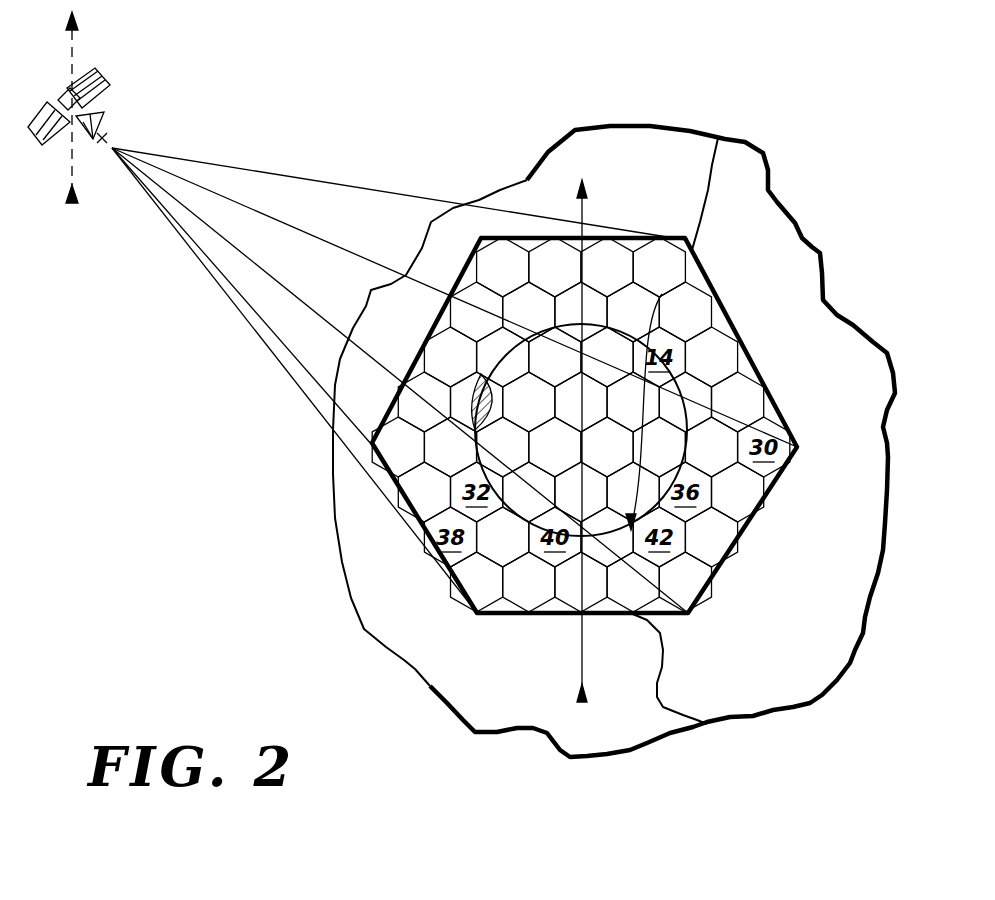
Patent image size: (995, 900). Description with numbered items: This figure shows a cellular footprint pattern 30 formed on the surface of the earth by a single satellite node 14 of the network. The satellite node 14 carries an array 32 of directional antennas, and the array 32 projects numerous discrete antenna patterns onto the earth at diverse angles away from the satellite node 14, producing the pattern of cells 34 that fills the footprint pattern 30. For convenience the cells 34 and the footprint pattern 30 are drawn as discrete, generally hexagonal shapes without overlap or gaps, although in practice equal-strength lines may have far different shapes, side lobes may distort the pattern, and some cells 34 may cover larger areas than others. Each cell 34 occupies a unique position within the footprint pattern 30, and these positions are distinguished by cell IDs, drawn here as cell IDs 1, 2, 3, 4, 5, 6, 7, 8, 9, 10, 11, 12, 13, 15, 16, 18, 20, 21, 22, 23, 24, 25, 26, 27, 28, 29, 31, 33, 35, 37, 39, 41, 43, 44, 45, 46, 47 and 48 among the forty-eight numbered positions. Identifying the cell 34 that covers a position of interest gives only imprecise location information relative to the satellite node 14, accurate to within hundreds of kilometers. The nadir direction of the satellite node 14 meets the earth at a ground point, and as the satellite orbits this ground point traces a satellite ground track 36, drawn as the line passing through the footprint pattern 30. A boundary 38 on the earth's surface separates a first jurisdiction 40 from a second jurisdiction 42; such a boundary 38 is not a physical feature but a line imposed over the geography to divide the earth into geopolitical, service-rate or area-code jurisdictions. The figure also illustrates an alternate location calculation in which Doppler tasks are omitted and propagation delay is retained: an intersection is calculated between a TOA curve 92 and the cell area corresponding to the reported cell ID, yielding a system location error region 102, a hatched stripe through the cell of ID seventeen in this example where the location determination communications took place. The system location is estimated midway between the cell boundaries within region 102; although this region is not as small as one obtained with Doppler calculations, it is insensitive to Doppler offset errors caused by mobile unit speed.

The satellite node 14 is at (102, 78).
The array of directional antennas 32 is at (107, 127).
The cells 34 is at (463, 293).
The satellite ground track 36 is at (586, 210).
The boundary 38 is at (707, 200).
The first jurisdiction 40 is at (815, 270).
The second jurisdiction 42 is at (527, 183).
The footprint pattern 30 is at (786, 496).
The TOA curve 92 is at (800, 472).
The system location error region 102 is at (424, 379).
The cell ID 1 is at (509, 282).
The cell ID 2 is at (561, 282).
The cell ID 3 is at (601, 282).
The cell ID 4 is at (653, 282).
The cell ID 5 is at (483, 327).
The cell ID 6 is at (535, 327).
The cell ID 7 is at (575, 327).
The cell ID 8 is at (627, 327).
The cell ID 9 is at (679, 327).
The cell ID 10 is at (462, 372).
The cell ID 11 is at (514, 372).
The cell ID 12 is at (566, 372).
The cell ID 13 is at (596, 372).
The cell ID 15 is at (700, 372).
The cell ID 16 is at (413, 417).
The cell ID 18 is at (540, 417).
The cell ID 20 is at (622, 417).
The cell ID 21 is at (674, 417).
The cell ID 22 is at (749, 417).
The cell ID 23 is at (387, 462).
The cell ID 24 is at (462, 462).
The cell ID 25 is at (514, 462).
The cell ID 26 is at (566, 462).
The cell ID 27 is at (596, 462).
The cell ID 28 is at (648, 462).
The cell ID 29 is at (700, 462).
The cell ID 31 is at (413, 507).
The cell ID 33 is at (540, 507).
The cell ID 35 is at (622, 507).
The cell ID 37 is at (749, 507).
The cell ID 39 is at (514, 552).
The cell ID 41 is at (596, 552).
The cell ID 43 is at (700, 552).
The cell ID 44 is at (488, 597).
The cell ID 45 is at (540, 597).
The cell ID 46 is at (570, 597).
The cell ID 47 is at (622, 597).
The cell ID 48 is at (674, 597).